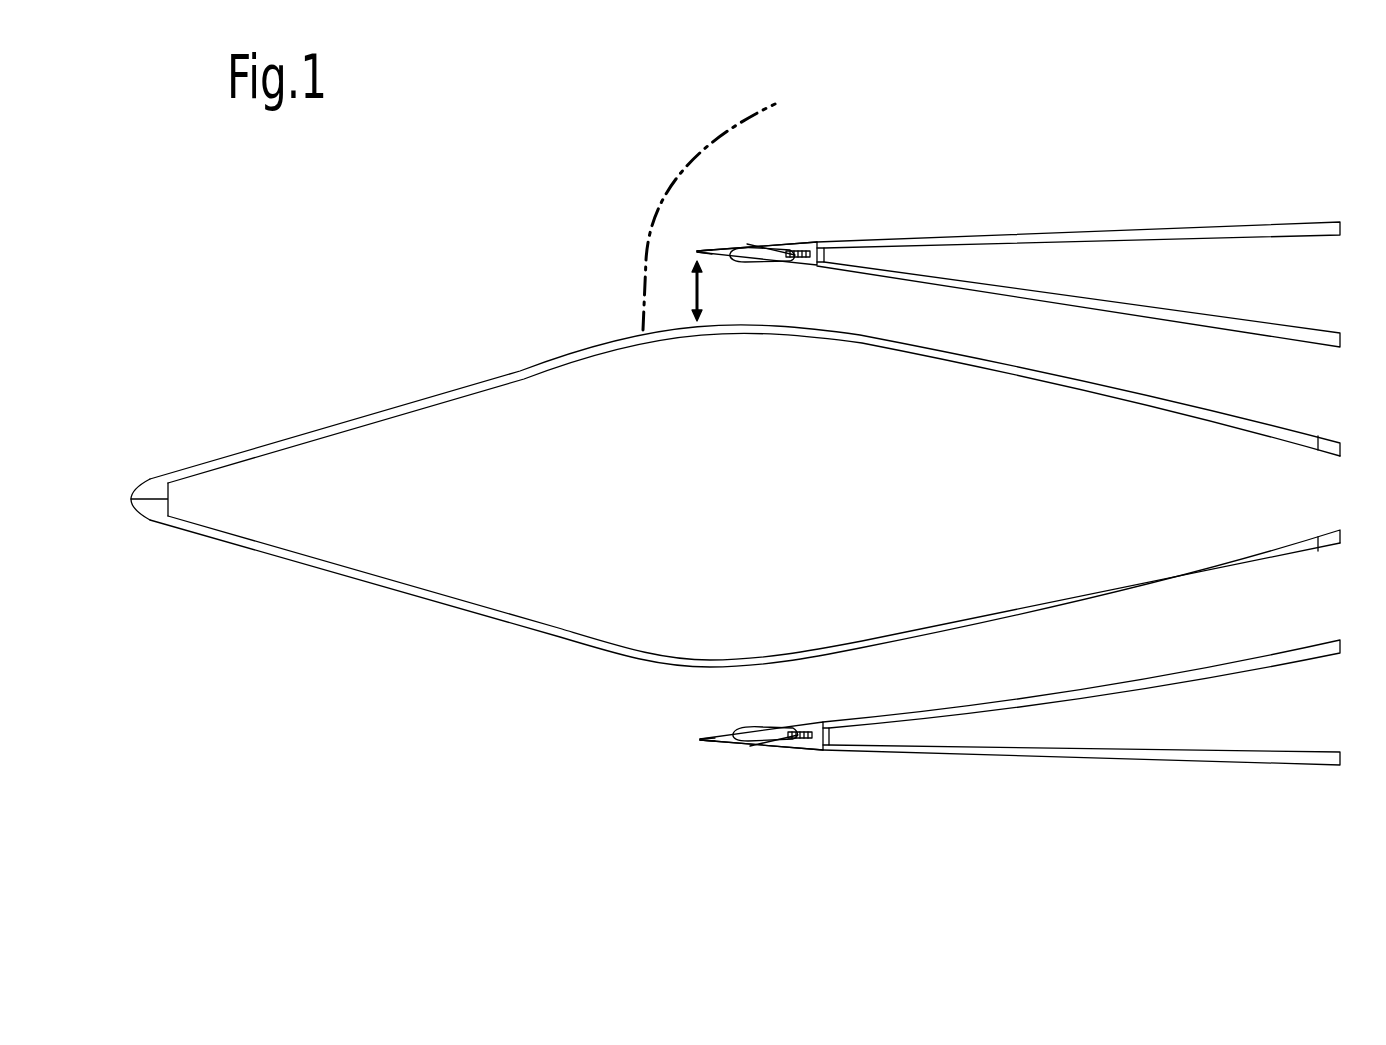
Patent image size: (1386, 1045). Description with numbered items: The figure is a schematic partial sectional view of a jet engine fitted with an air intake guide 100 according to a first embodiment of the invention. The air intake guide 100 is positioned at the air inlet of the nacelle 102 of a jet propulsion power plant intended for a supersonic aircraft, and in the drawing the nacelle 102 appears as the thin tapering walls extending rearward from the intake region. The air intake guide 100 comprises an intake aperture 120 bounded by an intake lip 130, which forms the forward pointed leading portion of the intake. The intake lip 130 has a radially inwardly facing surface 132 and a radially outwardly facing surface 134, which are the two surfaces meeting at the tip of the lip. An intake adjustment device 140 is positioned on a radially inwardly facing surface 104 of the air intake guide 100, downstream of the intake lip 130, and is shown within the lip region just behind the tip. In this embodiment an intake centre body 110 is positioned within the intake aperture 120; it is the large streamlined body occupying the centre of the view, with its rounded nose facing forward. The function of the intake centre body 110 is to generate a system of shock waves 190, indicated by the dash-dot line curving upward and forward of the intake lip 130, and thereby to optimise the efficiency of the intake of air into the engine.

The air intake guide 100 is at (735, 460).
The nacelle 102 is at (983, 236).
The radially inwardly facing surface 104 is at (718, 261).
The intake centre body 110 is at (447, 395).
The intake aperture 120 is at (692, 692).
The intake lip 130 is at (697, 252).
The radially inwardly facing surface 132 is at (712, 262).
The radially outwardly facing surface 134 is at (700, 249).
The intake adjustment device 140 is at (760, 262).
The system of shock waves 190 is at (690, 217).